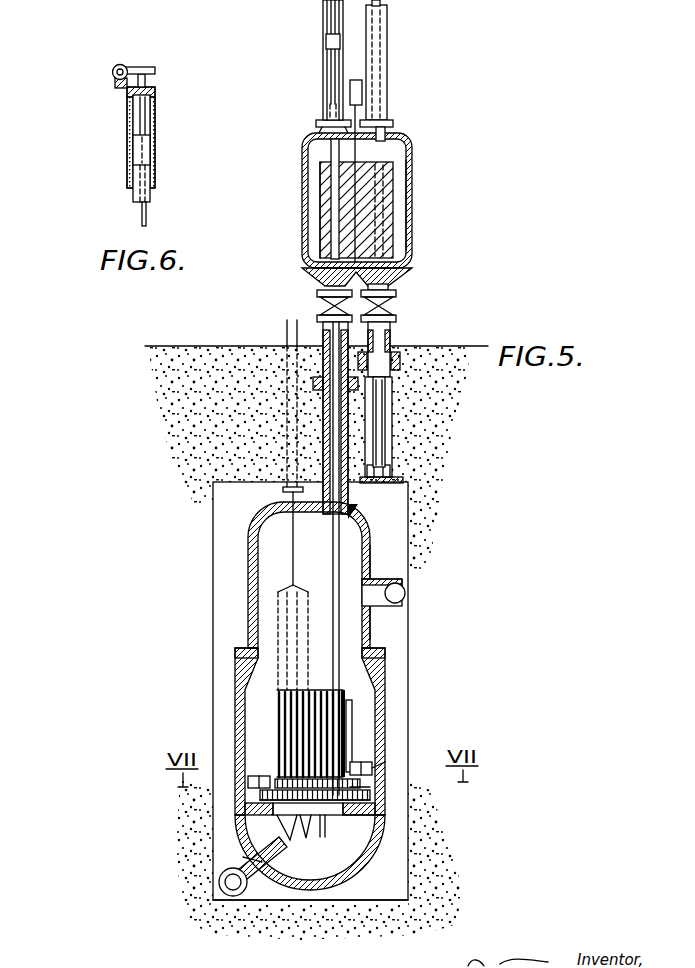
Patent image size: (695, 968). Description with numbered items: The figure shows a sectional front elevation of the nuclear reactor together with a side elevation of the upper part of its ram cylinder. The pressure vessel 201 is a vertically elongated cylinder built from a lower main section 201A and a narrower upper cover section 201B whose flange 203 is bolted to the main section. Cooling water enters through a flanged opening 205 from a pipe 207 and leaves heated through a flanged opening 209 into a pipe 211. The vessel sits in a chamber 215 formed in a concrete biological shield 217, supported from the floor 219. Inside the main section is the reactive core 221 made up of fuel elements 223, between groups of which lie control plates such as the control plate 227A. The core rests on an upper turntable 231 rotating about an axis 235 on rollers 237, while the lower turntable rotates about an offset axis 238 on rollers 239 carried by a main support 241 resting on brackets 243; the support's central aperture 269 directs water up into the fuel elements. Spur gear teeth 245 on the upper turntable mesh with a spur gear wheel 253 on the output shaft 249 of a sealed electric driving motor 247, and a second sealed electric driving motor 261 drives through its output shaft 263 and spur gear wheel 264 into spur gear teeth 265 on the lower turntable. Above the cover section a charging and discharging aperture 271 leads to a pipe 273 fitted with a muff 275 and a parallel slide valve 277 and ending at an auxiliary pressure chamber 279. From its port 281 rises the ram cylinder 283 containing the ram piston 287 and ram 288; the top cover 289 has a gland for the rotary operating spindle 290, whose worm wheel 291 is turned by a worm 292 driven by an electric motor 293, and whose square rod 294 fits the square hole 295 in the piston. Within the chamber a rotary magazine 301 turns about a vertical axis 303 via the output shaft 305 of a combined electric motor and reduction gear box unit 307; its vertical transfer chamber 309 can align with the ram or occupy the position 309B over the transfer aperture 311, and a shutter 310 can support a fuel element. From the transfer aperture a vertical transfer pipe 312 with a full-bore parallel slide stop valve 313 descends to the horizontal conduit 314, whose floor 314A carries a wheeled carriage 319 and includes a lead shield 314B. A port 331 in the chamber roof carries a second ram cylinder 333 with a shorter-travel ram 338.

In FIG. 5, the pressure vessel 201 is at (370, 533).
In FIG. 5, the lower main section 201A is at (389, 717).
In FIG. 5, the upper cover section 201B is at (366, 560).
In FIG. 5, the outwardly extending flange 203 is at (386, 654).
In FIG. 5, the flanged opening 205 is at (262, 860).
In FIG. 5, the pipe 207 is at (225, 883).
In FIG. 5, the flanged opening 209 is at (403, 609).
In FIG. 5, the pipe 211 is at (402, 598).
In FIG. 5, the chamber 215 is at (400, 689).
In FIG. 5, the concrete biological shield 217 is at (432, 870).
In FIG. 5, the floor 219 is at (313, 900).
In FIG. 5, the reactive core 221 is at (277, 724).
In FIG. 5, the fuel elements 223 is at (288, 708).
In FIG. 5, the control plate 227A is at (300, 600).
In FIG. 5, the upper turntable 231 is at (300, 780).
In FIG. 5, the axis 235 is at (310, 663).
In FIG. 5, the rollers 237 is at (352, 852).
In FIG. 5, the axis 238 is at (310, 691).
In FIG. 5, the rollers 239 is at (283, 803).
In FIG. 5, the main support 241 is at (238, 851).
In FIG. 5, the brackets 243 is at (245, 806).
In FIG. 5, the spur gear teeth 245 is at (347, 770).
In FIG. 5, the sealed electric driving motor 247 is at (380, 768).
In FIG. 5, the output shaft 249 is at (362, 779).
In FIG. 5, the spur gear wheel 253 is at (372, 787).
In FIG. 5, the second sealed electric driving motor 261 is at (248, 781).
In FIG. 5, the output shaft 263 is at (262, 794).
In FIG. 5, the spur gear wheel 264 is at (268, 800).
In FIG. 5, the spur gear teeth 265 is at (326, 805).
In FIG. 5, the central aperture 269 is at (378, 822).
In FIG. 5, the charging and discharging aperture 271 is at (330, 508).
In FIG. 5, the pipe 273 is at (318, 322).
In FIG. 5, the muff 275 is at (313, 383).
In FIG. 5, the parallel slide valve 277 is at (322, 300).
In FIG. 5, the auxiliary pressure chamber 279 is at (412, 242).
In FIG. 5, the port 281 is at (316, 125).
In FIG. 5, the ram cylinder 283 is at (327, 20).
In FIG. 6, the ram cylinder 283 is at (155, 133).
In FIG. 5, the ram piston 287 is at (330, 45).
In FIG. 6, the ram piston 287 is at (155, 150).
In FIG. 5, the ram 288 is at (328, 95).
In FIG. 6, the ram 288 is at (155, 186).
In FIG. 6, the top cover 289 is at (118, 86).
In FIG. 6, the rotary operating spindle 290 is at (145, 81).
In FIG. 6, the worm wheel 291 is at (155, 70).
In FIG. 6, the worm 292 is at (119, 64).
In FIG. 6, the electric motor 293 is at (112, 73).
In FIG. 5, the rod 294 is at (325, 72).
In FIG. 6, the rod 294 is at (143, 117).
In FIG. 6, the square hole 295 is at (140, 148).
In FIG. 5, the rotary magazine 301 is at (388, 193).
In FIG. 5, the vertical axis 303 is at (340, 228).
In FIG. 5, the output shaft 305 is at (353, 155).
In FIG. 5, the combined electric motor and reduction gear box unit 307 is at (357, 85).
In FIG. 5, the vertical transfer chamber 309 is at (333, 193).
In FIG. 5, the transfer chamber position 309B is at (396, 228).
In FIG. 5, the shutter 310 is at (318, 263).
In FIG. 5, the transfer aperture 311 is at (380, 278).
In FIG. 5, the vertical transfer pipe 312 is at (384, 328).
In FIG. 5, the full-bore parallel slide stop valve 313 is at (382, 304).
In FIG. 5, the horizontal conduit 314 is at (392, 402).
In FIG. 5, the floor 314A is at (370, 506).
In FIG. 5, the lead shield 314B is at (403, 478).
In FIG. 5, the wheeled carriage 319 is at (379, 456).
In FIG. 5, the port 331 is at (386, 134).
In FIG. 5, the ram cylinder 333 is at (387, 20).
In FIG. 5, the ram 338 is at (406, 152).